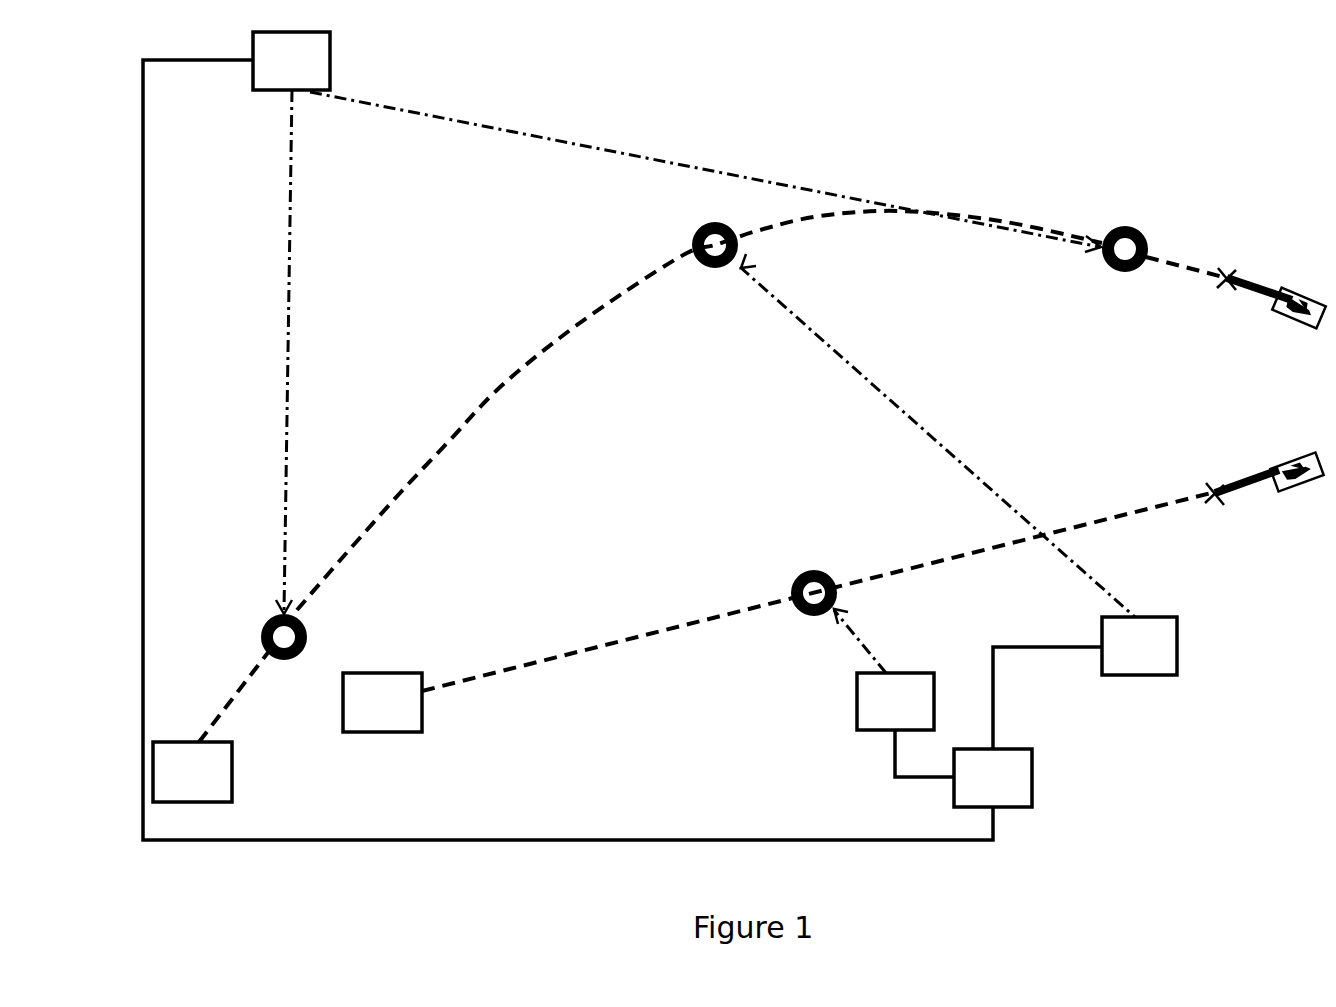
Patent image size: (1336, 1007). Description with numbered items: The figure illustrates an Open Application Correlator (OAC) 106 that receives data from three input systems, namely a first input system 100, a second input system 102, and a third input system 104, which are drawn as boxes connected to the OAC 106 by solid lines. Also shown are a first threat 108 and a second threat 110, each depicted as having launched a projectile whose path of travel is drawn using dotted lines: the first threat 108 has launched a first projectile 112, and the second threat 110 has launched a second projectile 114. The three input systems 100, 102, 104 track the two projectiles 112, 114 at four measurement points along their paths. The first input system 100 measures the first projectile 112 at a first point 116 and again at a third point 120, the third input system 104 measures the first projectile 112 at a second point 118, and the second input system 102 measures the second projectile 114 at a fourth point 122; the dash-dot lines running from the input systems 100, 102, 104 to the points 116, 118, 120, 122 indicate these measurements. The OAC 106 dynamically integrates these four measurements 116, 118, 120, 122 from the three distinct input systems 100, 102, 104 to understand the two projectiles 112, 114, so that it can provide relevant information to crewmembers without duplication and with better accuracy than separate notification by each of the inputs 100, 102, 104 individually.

The input system 1 100 is at (291, 61).
The input system 2 102 is at (895, 701).
The input system 3 104 is at (1139, 646).
The Open Application Correlator (OAC) 106 is at (993, 778).
The first threat 108 is at (192, 772).
The second threat 110 is at (382, 702).
The first projectile 112 is at (1243, 275).
The second projectile 114 is at (1250, 465).
The point 1 116 is at (268, 630).
The point 2 118 is at (693, 250).
The point 3 120 is at (1105, 240).
The point 4 122 is at (795, 580).